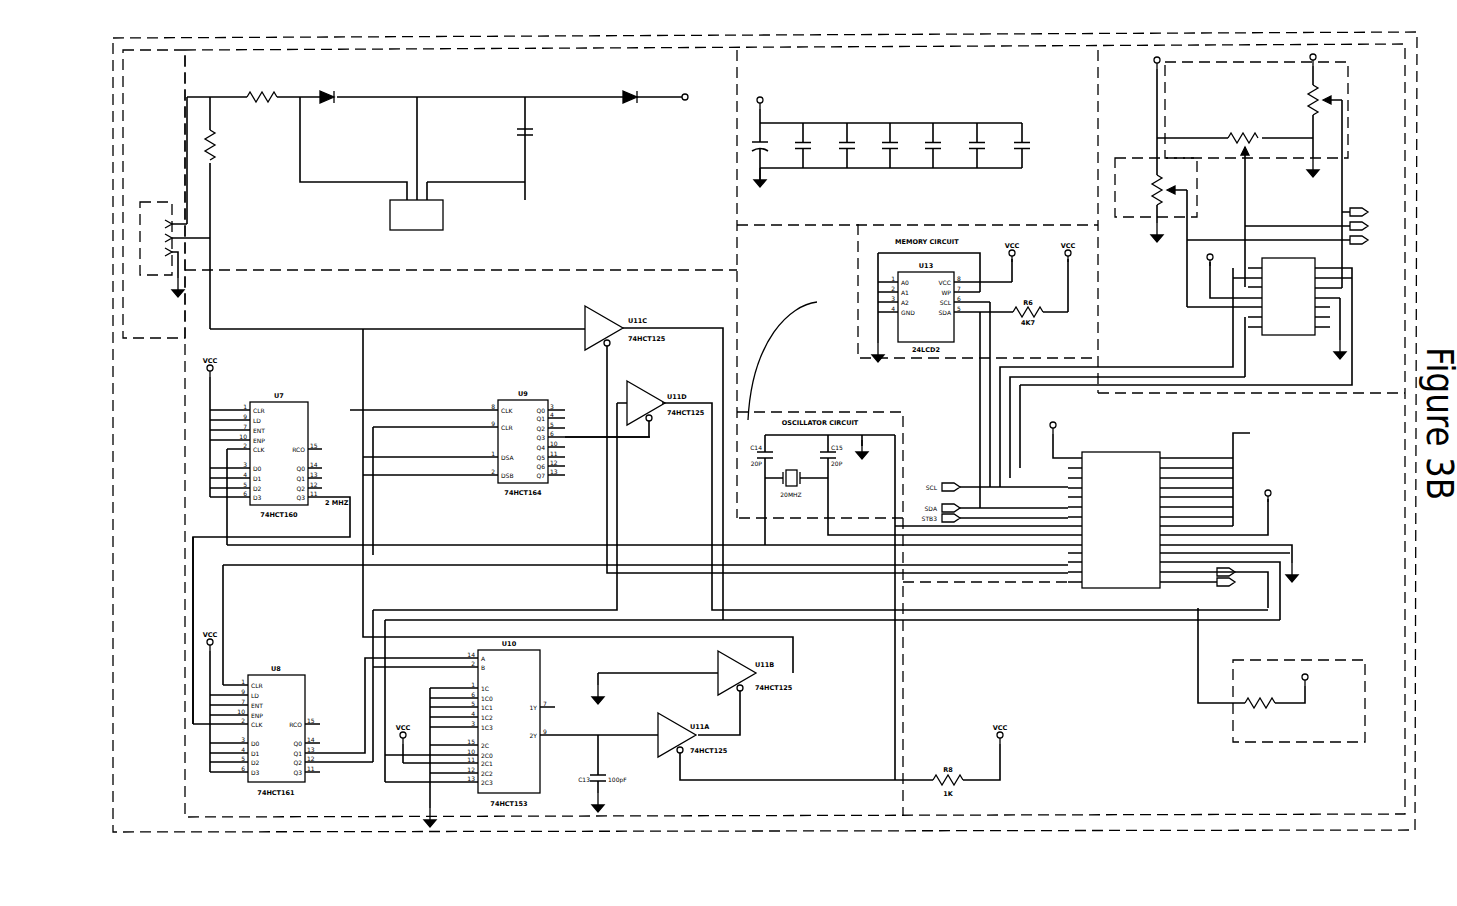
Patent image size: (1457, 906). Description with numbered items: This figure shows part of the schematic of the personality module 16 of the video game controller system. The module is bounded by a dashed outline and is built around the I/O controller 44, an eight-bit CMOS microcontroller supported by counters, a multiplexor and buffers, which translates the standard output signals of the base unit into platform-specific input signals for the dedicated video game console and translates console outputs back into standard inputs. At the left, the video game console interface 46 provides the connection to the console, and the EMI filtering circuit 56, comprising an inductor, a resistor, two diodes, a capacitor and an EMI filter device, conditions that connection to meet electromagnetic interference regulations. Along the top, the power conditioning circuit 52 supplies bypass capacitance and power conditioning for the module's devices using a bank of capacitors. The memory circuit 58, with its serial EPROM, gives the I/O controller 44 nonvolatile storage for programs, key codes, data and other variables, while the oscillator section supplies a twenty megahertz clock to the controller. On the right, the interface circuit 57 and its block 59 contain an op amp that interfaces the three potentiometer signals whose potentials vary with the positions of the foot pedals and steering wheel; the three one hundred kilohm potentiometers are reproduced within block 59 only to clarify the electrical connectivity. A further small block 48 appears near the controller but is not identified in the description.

The personality module 16 is at (1090, 816).
The I/O controller 44 is at (910, 722).
The video game console interface 46 is at (135, 52).
The reset circuit 48 is at (1347, 670).
The power conditioning circuit 52 is at (903, 50).
The EMI filtering circuit 56 is at (420, 55).
The interface circuit 57 is at (1110, 147).
The memory circuit 58 is at (1090, 232).
The interface circuit block 59 is at (1143, 173).